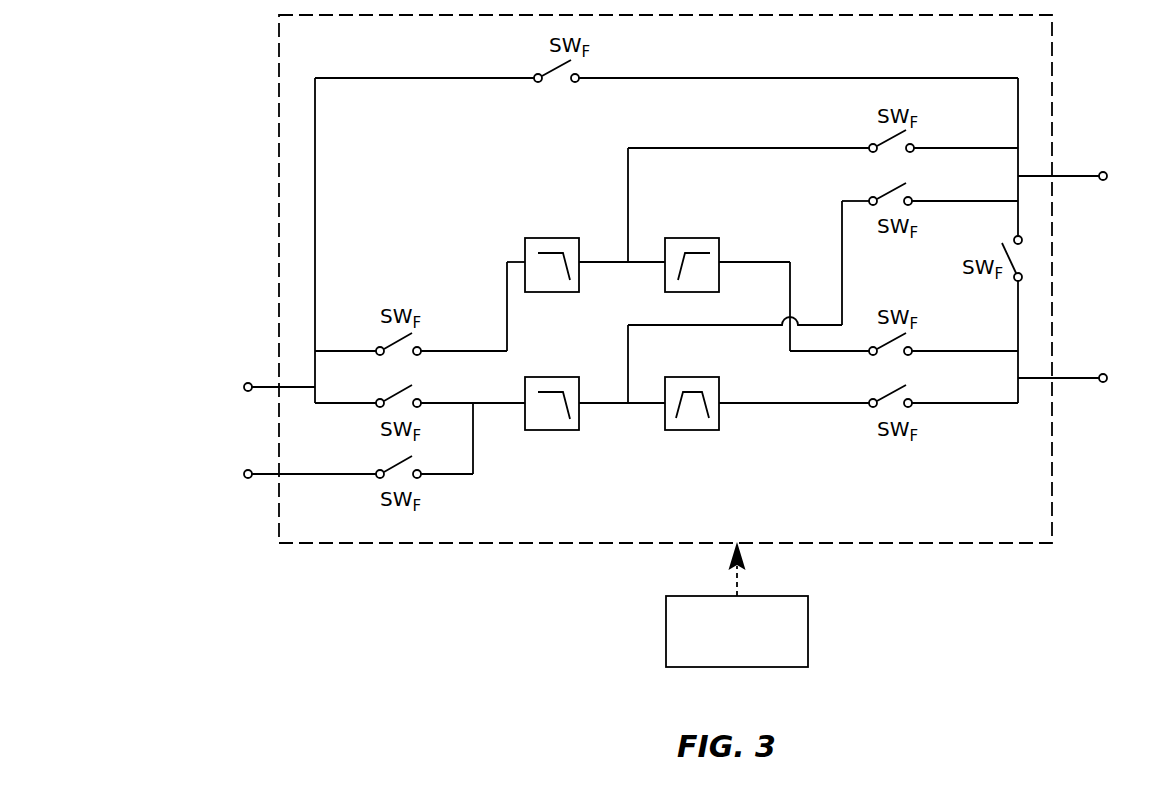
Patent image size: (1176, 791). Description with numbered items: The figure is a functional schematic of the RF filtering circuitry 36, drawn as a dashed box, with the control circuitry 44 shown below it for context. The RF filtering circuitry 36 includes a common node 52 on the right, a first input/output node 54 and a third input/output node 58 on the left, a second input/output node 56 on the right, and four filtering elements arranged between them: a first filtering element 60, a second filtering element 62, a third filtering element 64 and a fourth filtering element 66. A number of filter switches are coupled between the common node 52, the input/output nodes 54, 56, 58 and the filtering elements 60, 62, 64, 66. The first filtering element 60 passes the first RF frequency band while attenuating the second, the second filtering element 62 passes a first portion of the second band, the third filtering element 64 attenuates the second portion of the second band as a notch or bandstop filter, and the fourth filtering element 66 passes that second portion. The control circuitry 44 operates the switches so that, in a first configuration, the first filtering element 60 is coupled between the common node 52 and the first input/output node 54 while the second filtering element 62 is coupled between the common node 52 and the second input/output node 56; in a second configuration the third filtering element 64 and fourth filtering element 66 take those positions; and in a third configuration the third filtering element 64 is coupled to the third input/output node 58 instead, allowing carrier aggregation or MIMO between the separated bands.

The RF filtering circuitry 36 is at (1032, 531).
The control circuitry 44 is at (726, 651).
The common node 52 is at (1110, 175).
The first input/output node 54 is at (243, 385).
The second input/output node 56 is at (1110, 377).
The third input/output node 58 is at (243, 472).
The first filtering element 60 is at (562, 236).
The second filtering element 62 is at (702, 236).
The third filtering element 64 is at (562, 375).
The fourth filtering element 66 is at (702, 375).